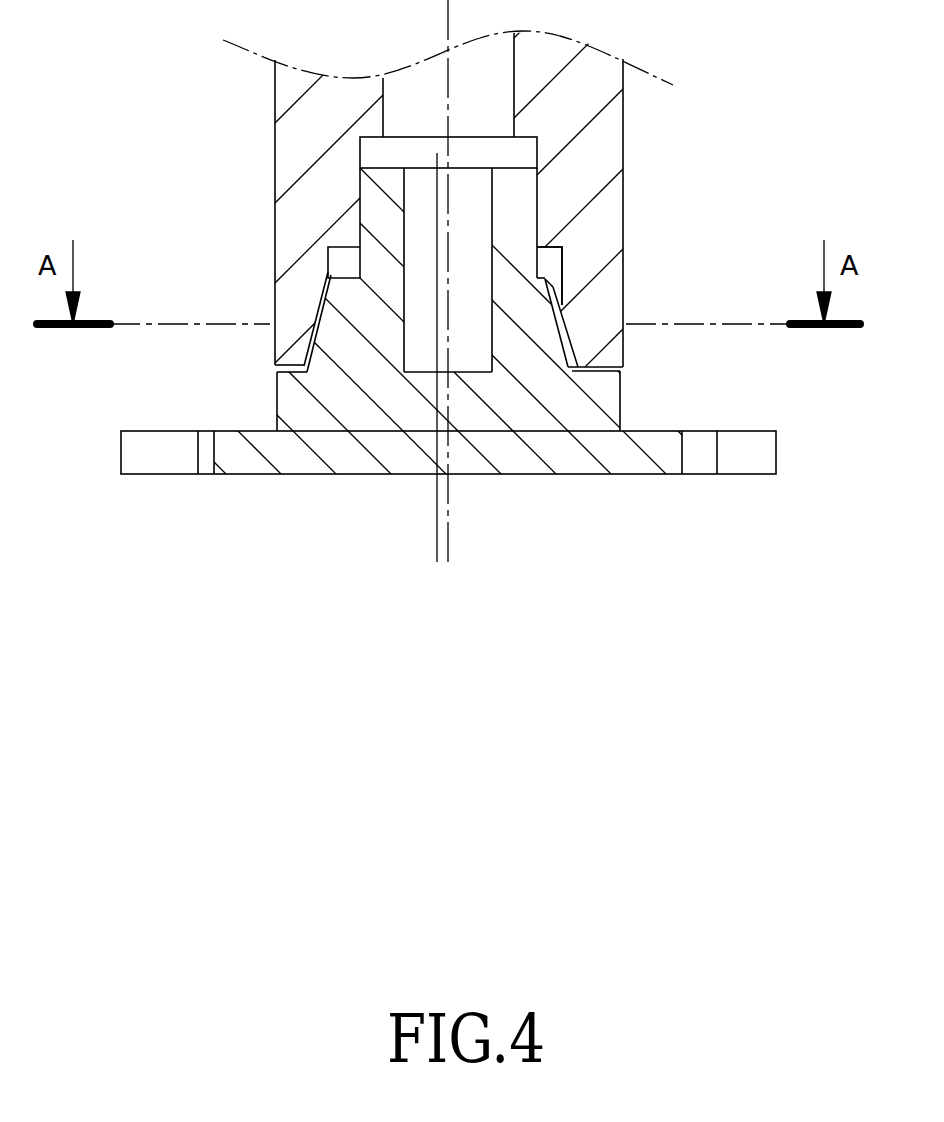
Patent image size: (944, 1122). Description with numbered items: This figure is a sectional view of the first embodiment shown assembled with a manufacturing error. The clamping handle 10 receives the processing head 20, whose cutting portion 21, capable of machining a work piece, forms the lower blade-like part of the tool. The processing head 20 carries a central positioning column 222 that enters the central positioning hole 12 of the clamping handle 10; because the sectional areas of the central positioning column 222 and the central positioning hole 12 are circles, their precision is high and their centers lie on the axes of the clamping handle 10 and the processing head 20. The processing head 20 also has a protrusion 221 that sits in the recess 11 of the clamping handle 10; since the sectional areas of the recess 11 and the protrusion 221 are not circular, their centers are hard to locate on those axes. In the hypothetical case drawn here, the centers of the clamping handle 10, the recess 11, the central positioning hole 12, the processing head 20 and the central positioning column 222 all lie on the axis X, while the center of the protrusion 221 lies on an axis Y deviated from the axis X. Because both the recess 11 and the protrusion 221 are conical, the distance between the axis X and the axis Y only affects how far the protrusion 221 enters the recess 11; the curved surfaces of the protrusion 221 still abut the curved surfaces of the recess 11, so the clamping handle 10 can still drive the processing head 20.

The clamping handle 10 is at (667, 123).
The recess 11 is at (571, 342).
The central positioning hole 12 is at (536, 215).
The processing head 20 is at (499, 558).
The cutting portion 21 is at (260, 467).
The protrusion 221 is at (333, 323).
The central positioning column 222 is at (373, 213).
The axis X is at (448, 520).
The axis Y is at (437, 510).